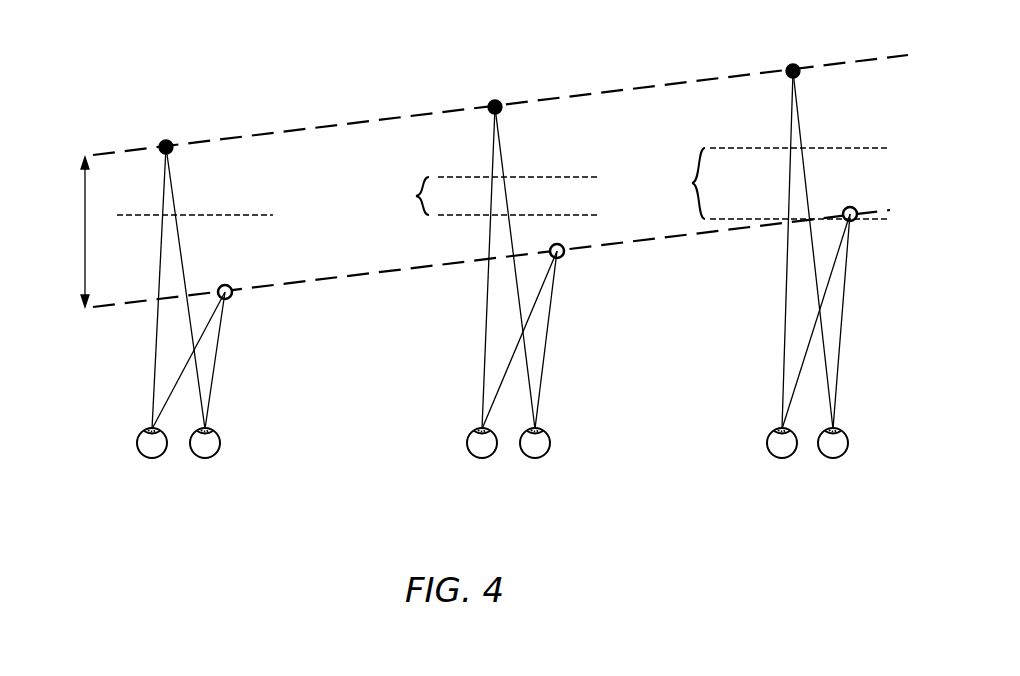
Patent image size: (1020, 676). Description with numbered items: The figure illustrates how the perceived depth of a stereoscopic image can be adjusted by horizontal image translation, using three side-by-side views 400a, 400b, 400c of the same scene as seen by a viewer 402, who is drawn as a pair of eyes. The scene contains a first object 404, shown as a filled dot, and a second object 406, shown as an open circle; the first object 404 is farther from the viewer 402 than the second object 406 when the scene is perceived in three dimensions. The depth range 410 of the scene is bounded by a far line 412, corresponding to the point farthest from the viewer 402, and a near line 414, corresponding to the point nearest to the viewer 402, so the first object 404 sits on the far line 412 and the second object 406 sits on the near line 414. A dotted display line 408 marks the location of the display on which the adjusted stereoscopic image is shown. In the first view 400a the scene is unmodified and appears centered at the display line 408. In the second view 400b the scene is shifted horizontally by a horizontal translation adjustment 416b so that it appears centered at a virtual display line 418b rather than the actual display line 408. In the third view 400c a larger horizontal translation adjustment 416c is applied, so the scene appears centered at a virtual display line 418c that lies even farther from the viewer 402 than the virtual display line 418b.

The first view 400a is at (174, 484).
The second view 400b is at (504, 485).
The third view 400c is at (820, 485).
The viewer 402 is at (128, 442).
The first object 404 is at (171, 139).
The second object 406 is at (233, 287).
The display line 408 is at (132, 219).
The depth range 410 is at (83, 210).
The far line 412 is at (382, 121).
The near line 414 is at (378, 274).
The horizontal translation adjustment 416b is at (394, 196).
The horizontal translation adjustment 416c is at (670, 183).
The virtual display line 418b is at (553, 177).
The virtual display line 418c is at (843, 148).